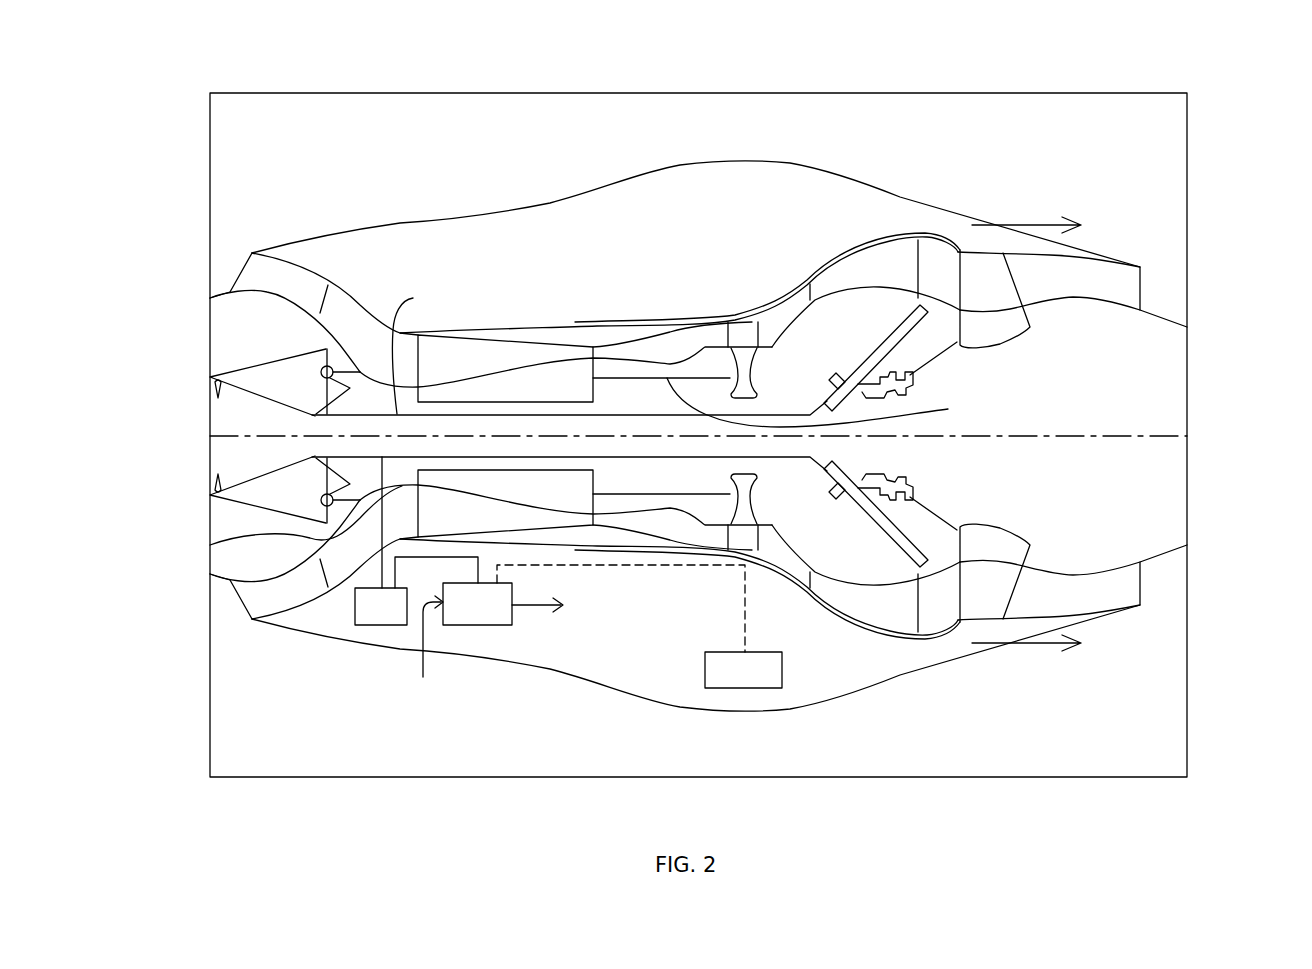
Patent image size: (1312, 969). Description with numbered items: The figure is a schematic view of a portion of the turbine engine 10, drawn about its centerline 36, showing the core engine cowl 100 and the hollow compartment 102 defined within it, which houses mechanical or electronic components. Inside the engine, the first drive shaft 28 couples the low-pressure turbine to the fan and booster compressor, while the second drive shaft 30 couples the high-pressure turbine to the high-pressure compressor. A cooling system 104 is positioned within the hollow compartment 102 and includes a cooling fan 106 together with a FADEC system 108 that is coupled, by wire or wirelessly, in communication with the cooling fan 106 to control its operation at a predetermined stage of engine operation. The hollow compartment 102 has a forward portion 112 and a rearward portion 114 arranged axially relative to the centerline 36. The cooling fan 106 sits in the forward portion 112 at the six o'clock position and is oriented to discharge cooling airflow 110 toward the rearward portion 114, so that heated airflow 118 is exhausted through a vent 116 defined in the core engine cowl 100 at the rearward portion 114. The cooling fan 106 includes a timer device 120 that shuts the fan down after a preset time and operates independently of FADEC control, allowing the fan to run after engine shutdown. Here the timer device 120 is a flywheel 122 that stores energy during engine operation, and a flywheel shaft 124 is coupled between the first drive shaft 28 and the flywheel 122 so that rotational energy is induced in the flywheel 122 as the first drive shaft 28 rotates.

The turbine engine 10 is at (1225, 78).
The first drive shaft 28 is at (419, 352).
The second drive shaft 30 is at (824, 402).
The centerline 36 is at (1158, 436).
The core engine cowl 100 is at (542, 205).
The hollow compartment 102 is at (640, 251).
The cooling system 104 is at (330, 620).
The cooling fan 106 is at (478, 625).
The FADEC system 108 is at (770, 688).
The cooling airflow 110 is at (533, 606).
The forward portion 112 is at (322, 245).
The rearward portion 114 is at (884, 216).
The vent 116 is at (1009, 200).
The heated airflow 118 is at (1043, 222).
The timer device 120 is at (343, 640).
The flywheel 122 is at (385, 625).
The flywheel shaft 124 is at (210, 545).